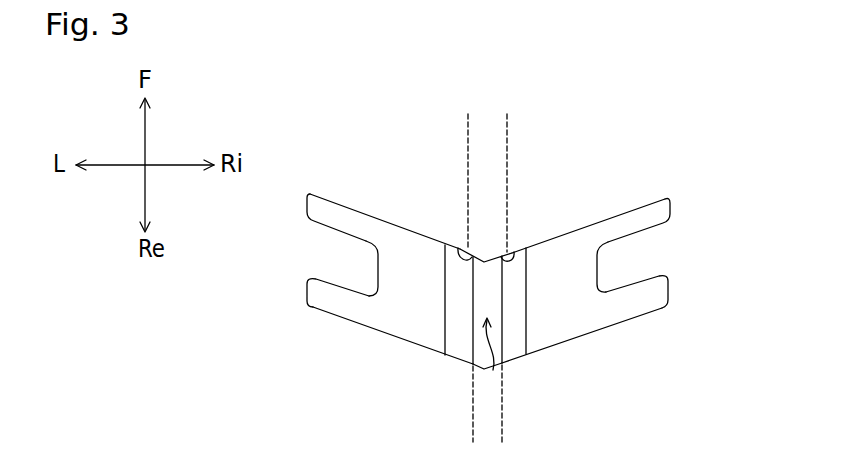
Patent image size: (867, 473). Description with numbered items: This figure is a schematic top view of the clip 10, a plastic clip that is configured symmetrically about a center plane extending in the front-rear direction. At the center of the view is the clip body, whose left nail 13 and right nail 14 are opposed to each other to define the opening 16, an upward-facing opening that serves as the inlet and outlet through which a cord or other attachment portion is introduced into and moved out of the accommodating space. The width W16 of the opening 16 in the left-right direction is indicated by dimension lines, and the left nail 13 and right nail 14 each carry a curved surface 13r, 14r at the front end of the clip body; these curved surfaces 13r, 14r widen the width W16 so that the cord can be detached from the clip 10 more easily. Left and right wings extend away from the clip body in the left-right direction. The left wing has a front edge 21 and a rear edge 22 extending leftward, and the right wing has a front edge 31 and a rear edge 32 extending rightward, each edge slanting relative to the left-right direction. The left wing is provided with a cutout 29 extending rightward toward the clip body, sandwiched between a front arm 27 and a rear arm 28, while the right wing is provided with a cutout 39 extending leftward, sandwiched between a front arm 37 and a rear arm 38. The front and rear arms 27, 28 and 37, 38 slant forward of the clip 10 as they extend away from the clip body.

The clip 10 is at (288, 142).
The left nail 13 is at (455, 352).
The curved surface 13r is at (462, 250).
The right nail 14 is at (524, 352).
The curved surface 14r is at (515, 250).
The opening 16 is at (486, 330).
The front edge 21 is at (410, 228).
The rear edge 22 is at (378, 331).
The front arm 27 is at (338, 212).
The rear arm 28 is at (326, 311).
The cutout 29 is at (350, 275).
The front edge 31 is at (576, 229).
The rear edge 32 is at (595, 332).
The front arm 37 is at (653, 204).
The rear arm 38 is at (652, 311).
The cutout 39 is at (642, 278).
The width of the opening W16 is at (507, 122).